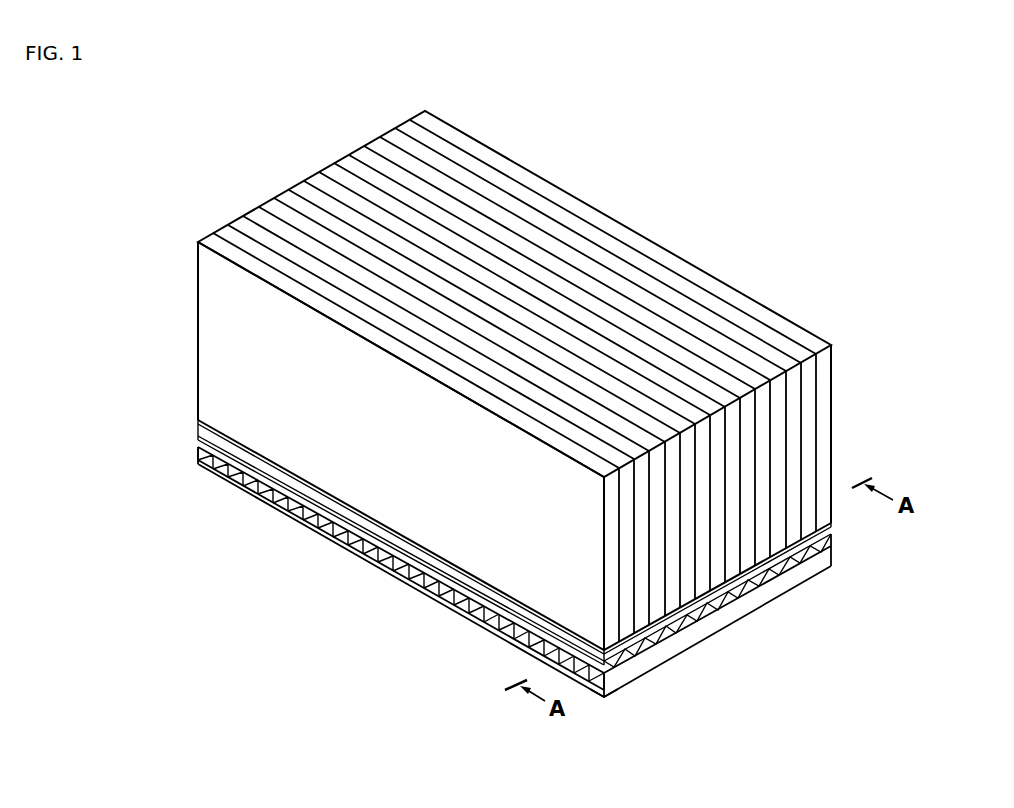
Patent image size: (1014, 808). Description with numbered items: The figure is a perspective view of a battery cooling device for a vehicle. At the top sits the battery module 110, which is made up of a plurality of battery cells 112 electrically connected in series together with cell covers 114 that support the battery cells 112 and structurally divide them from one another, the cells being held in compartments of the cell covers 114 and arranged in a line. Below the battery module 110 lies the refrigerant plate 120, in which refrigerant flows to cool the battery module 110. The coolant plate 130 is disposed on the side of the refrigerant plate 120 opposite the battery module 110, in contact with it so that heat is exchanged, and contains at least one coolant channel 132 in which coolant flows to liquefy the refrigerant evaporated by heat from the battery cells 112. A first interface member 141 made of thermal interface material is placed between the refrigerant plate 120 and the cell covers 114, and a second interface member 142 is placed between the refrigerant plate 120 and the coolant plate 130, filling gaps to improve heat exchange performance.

The battery module 110 is at (212, 206).
The battery cell 112 is at (205, 272).
The cell cover 114 is at (257, 228).
The refrigerant plate 120 is at (460, 607).
The coolant plate 130 is at (688, 656).
The coolant channel 132 is at (598, 700).
The first interface member 141 is at (432, 575).
The second interface member 142 is at (733, 605).